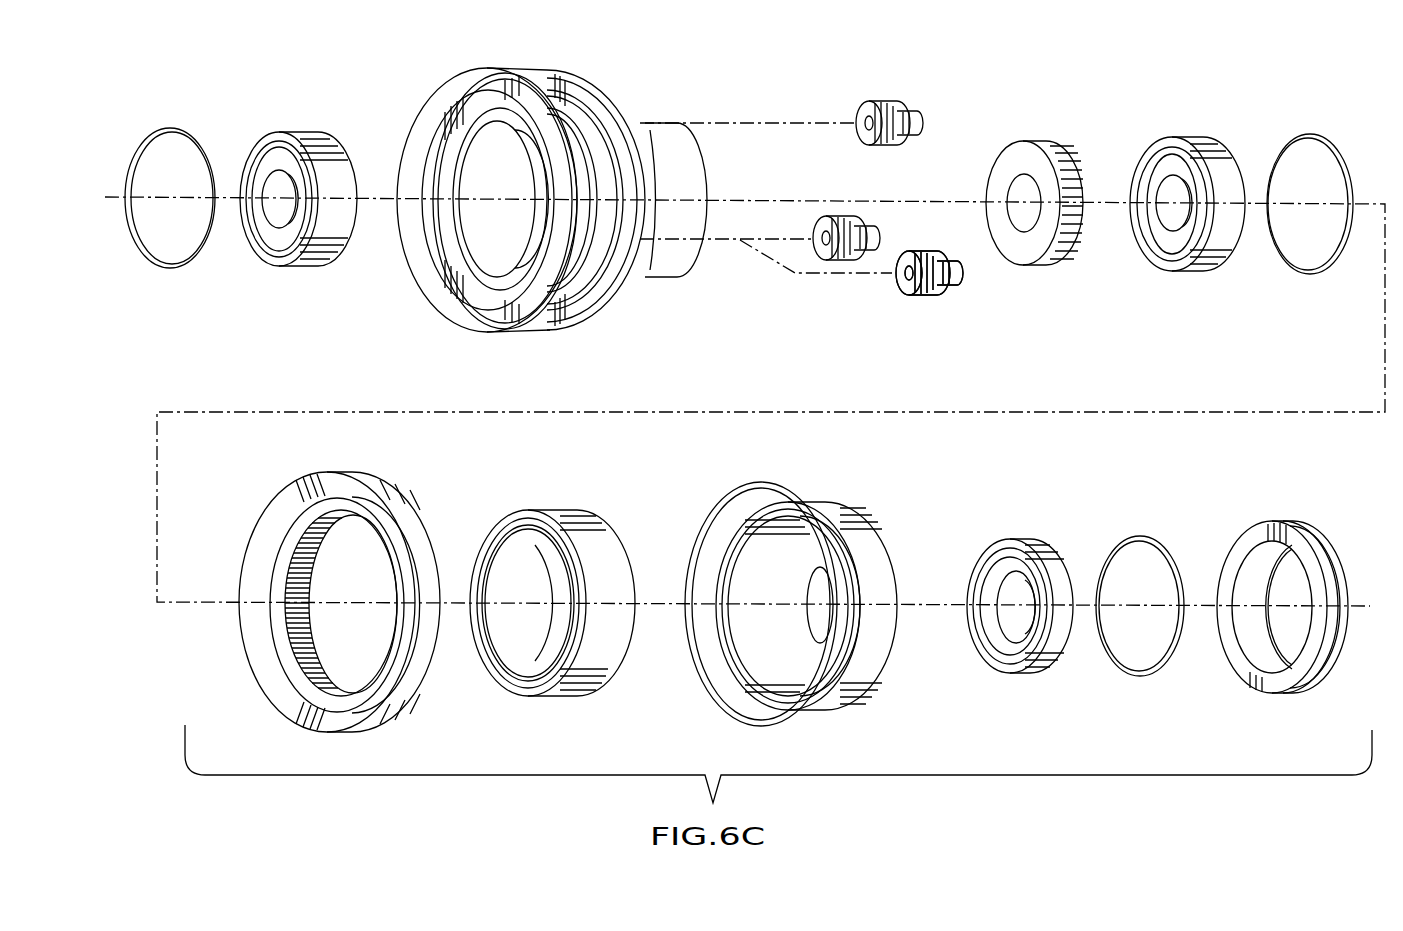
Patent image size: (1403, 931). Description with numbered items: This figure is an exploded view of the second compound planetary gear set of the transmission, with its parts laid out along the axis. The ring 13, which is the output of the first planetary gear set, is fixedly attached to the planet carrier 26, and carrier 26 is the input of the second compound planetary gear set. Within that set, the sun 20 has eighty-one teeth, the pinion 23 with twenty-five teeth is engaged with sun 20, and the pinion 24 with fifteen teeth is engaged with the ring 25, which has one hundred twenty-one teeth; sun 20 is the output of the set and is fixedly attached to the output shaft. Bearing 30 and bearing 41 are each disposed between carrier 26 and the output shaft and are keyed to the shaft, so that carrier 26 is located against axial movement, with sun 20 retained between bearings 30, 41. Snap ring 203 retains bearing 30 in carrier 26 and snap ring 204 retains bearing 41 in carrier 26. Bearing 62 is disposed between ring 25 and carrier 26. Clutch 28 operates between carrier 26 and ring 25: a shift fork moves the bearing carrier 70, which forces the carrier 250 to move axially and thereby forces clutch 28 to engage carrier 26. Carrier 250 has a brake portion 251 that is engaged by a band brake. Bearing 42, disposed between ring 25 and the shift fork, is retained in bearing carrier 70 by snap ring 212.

The ring 13 is at (447, 128).
The sun 20 is at (1030, 142).
The pinion 23 is at (933, 290).
The pinion 24 is at (929, 273).
The ring 25 is at (324, 583).
The planet carrier 26 is at (517, 327).
The clutch 28 is at (280, 693).
The bearing 30 is at (290, 132).
The bearing 41 is at (1180, 137).
The bearing 42 is at (1010, 540).
The bearing 62 is at (550, 508).
The bearing carrier 70 is at (1265, 522).
The snap ring 203 is at (180, 128).
The snap ring 204 is at (1320, 135).
The snap ring 212 is at (1143, 535).
The carrier 250 is at (837, 503).
The brake portion 251 is at (790, 483).